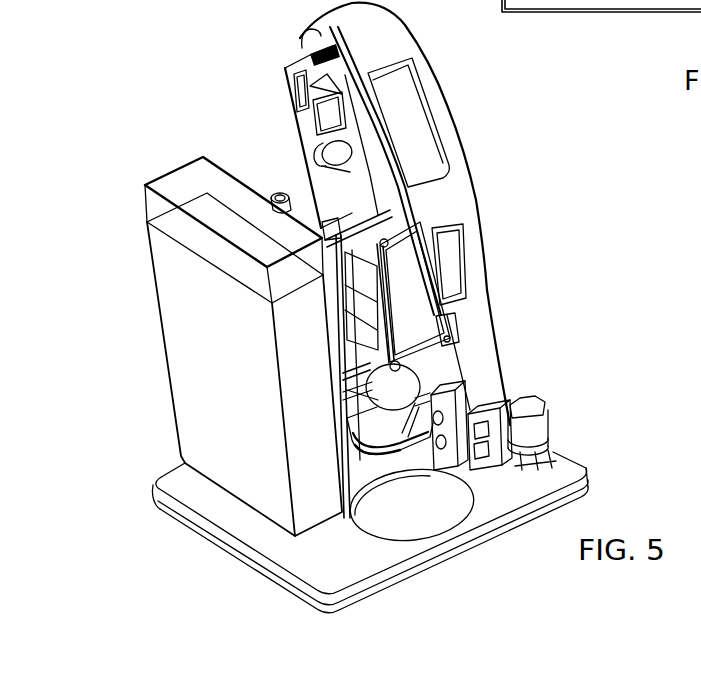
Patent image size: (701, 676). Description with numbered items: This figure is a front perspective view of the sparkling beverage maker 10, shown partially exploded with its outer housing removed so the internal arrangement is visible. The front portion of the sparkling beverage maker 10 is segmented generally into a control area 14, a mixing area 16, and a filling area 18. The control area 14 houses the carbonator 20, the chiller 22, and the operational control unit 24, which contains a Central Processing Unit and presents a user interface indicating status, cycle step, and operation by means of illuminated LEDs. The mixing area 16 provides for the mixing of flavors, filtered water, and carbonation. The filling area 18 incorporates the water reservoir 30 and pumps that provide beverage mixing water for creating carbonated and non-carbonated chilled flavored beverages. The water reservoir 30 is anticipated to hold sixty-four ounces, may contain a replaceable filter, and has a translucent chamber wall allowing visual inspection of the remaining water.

The sparkling beverage maker 10 is at (551, 229).
The control area 14 is at (454, 197).
The mixing area 16 is at (297, 42).
The filling area 18 is at (160, 155).
The carbonator 20 is at (292, 142).
The chiller 22 is at (423, 328).
The operational control unit 24 is at (408, 137).
The water reservoir 30 is at (151, 229).